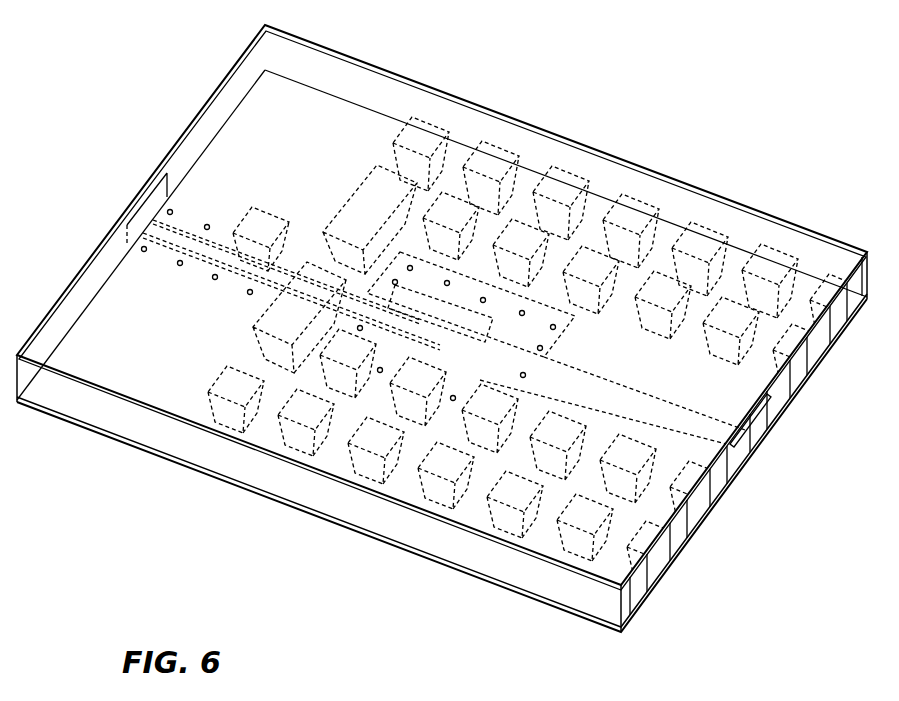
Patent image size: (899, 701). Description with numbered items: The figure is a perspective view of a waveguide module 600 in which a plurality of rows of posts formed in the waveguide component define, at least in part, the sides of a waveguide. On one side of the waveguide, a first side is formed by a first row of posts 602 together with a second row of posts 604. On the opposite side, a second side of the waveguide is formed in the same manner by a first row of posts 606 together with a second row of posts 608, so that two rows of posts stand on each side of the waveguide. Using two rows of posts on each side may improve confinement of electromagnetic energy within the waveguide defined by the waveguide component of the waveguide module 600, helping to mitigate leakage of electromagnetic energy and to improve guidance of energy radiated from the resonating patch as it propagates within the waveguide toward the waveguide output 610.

The waveguide module 600 is at (567, 100).
The first row of posts 602 is at (743, 313).
The second row of posts 604 is at (630, 207).
The first row of posts 606 is at (623, 457).
The second row of posts 608 is at (447, 470).
The waveguide output 610 is at (730, 467).